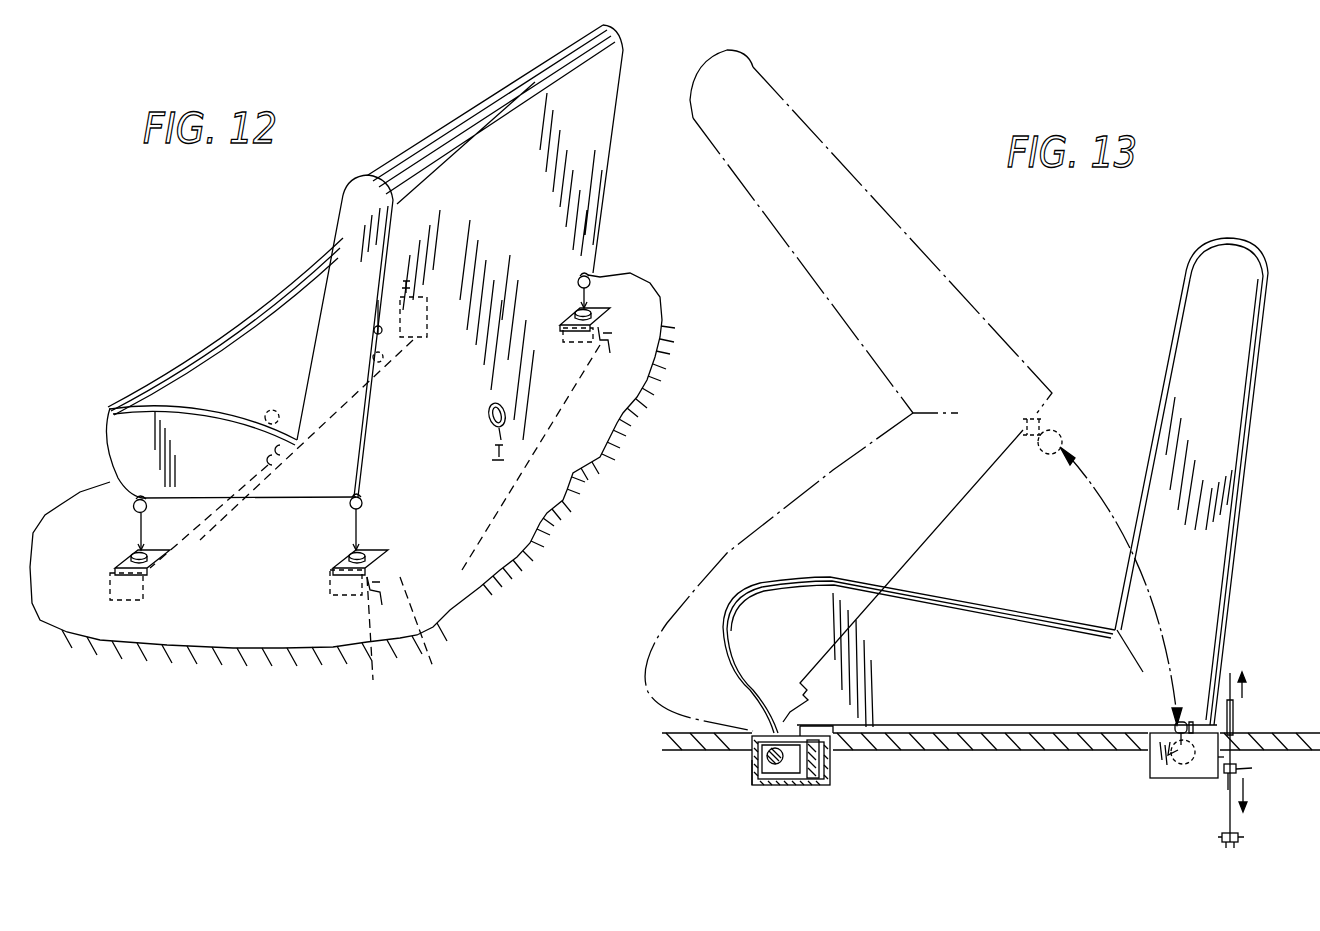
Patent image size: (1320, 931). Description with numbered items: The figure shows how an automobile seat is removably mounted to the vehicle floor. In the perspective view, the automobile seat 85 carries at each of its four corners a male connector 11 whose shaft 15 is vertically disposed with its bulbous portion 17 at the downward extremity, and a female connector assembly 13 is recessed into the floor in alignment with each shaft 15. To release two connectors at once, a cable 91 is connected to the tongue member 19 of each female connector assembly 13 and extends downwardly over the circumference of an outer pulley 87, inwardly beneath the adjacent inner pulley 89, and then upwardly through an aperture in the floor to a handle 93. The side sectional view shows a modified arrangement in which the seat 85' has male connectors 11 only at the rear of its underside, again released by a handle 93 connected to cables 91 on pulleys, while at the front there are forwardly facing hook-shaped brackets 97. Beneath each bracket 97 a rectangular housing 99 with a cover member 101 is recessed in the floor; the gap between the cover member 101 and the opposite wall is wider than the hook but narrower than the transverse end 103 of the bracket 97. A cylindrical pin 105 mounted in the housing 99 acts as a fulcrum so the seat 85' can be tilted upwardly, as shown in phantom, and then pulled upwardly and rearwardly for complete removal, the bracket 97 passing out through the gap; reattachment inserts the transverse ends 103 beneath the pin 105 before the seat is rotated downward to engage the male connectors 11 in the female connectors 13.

In FIG. 12, the automobile seat 85 is at (460, 261).
In FIG. 13, the seat 85' is at (972, 390).
In FIG. 12, the male connector 11 is at (150, 503).
In FIG. 13, the male connector 11 is at (1173, 727).
In FIG. 12, the female connector assembly 13 is at (112, 562).
In FIG. 13, the female connector assembly 13 is at (1152, 782).
In FIG. 12, the shaft 15 is at (133, 499).
In FIG. 13, the shaft 15 is at (1190, 722).
In FIG. 12, the bulbous portion 17 is at (136, 510).
In FIG. 13, the bulbous portion 17 is at (1148, 775).
In FIG. 12, the tongue member 19 is at (684, 333).
In FIG. 13, the tongue member 19 is at (1252, 770).
In FIG. 12, the outer pulley 87 is at (692, 362).
In FIG. 13, the outer pulley 87 is at (1242, 845).
In FIG. 12, the inner pulley 89 is at (560, 499).
In FIG. 12, the cable 91 is at (630, 442).
In FIG. 13, the cable 91 is at (1230, 804).
In FIG. 12, the handle 93 is at (490, 405).
In FIG. 13, the handle 93 is at (1232, 675).
In FIG. 13, the hook-shaped bracket 97 is at (830, 780).
In FIG. 13, the rectangular housing 99 is at (752, 788).
In FIG. 13, the cover member 101 is at (752, 755).
In FIG. 13, the transverse end 103 is at (779, 764).
In FIG. 13, the cylindrical pin 105 is at (800, 778).